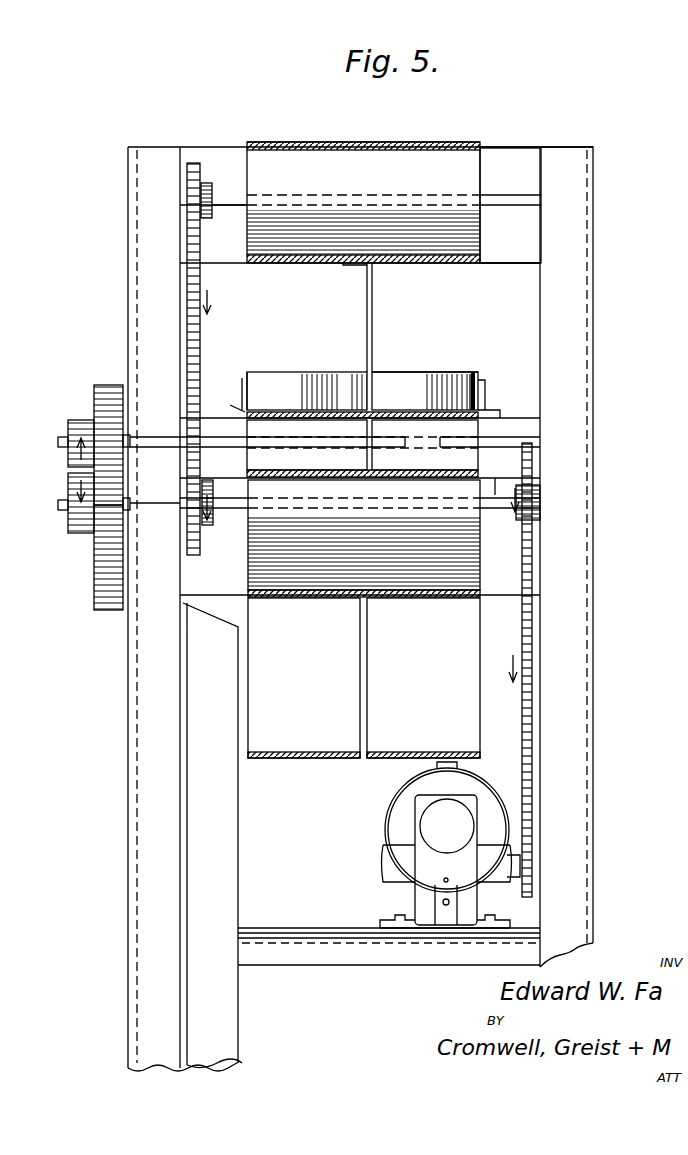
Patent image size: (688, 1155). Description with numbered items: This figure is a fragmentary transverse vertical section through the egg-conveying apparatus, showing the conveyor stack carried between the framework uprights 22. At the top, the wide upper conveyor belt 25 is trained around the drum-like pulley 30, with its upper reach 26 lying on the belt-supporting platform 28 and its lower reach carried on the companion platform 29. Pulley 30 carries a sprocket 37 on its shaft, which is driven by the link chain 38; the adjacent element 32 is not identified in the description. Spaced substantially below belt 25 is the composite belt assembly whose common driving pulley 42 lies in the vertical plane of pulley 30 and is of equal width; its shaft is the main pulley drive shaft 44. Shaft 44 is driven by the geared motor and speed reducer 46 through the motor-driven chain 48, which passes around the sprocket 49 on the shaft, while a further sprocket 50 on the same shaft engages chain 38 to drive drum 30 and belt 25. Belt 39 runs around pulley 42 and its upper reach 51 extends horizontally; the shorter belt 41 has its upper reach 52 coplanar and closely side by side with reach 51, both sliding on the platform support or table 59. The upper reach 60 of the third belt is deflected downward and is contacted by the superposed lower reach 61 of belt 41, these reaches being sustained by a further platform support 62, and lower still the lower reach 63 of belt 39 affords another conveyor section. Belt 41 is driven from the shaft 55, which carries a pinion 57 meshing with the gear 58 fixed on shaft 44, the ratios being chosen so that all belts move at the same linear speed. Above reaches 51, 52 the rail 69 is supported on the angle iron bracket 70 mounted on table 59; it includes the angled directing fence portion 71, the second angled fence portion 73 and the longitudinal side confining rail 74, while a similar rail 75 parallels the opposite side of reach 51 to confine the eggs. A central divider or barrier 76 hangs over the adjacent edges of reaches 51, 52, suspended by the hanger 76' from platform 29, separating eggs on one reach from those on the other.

The upright 22 is at (200, 818).
The upper conveyor belt 25 is at (286, 142).
The upper reach of upper conveyor belt 26 is at (372, 142).
The belt-supporting platform 28 is at (535, 148).
The belt-supporting platform 29 is at (495, 263).
The drum-like pulley 30 is at (470, 172).
The shaft 32 is at (231, 212).
The sprocket 37 is at (207, 195).
The link chain 38 is at (210, 312).
The flexible endless belt 39 is at (488, 412).
The flexible endless belt 41 is at (240, 408).
The common driving pulley 42 is at (460, 548).
The main pulley drive shaft 44 is at (58, 505).
The geared motor and speed reducer 46 is at (493, 828).
The motor-driven chain 48 is at (535, 692).
The sprocket 49 is at (541, 493).
The sprocket 50 is at (200, 535).
The upper reach of belt 39 51 is at (406, 410).
The upper reach of belt 41 52 is at (322, 410).
The shaft of drive pulley 53 55 is at (132, 440).
The pinion 57 is at (108, 385).
The gear 58 is at (94, 607).
The platform support or table 59 is at (270, 410).
The upper reach of belt 40 60 is at (247, 474).
The lower reach of belt 41 61 is at (367, 462).
The platform support 62 is at (450, 472).
The lower reach of belt 39 63 is at (314, 600).
The rail 69 is at (401, 365).
The angle iron bracket 70 is at (486, 388).
The directing fence portion 71 is at (437, 374).
The second angled directing fence portion 73 is at (310, 374).
The longitudinal side confining rail 74 is at (254, 372).
The rail 75 is at (474, 372).
The central divider or barrier 76 is at (347, 372).
The hanger 76' is at (347, 317).